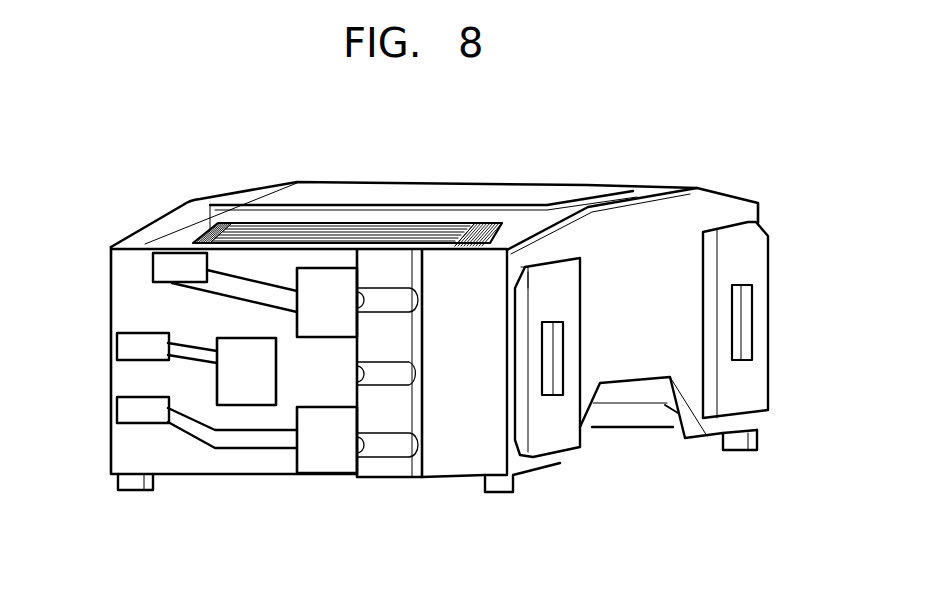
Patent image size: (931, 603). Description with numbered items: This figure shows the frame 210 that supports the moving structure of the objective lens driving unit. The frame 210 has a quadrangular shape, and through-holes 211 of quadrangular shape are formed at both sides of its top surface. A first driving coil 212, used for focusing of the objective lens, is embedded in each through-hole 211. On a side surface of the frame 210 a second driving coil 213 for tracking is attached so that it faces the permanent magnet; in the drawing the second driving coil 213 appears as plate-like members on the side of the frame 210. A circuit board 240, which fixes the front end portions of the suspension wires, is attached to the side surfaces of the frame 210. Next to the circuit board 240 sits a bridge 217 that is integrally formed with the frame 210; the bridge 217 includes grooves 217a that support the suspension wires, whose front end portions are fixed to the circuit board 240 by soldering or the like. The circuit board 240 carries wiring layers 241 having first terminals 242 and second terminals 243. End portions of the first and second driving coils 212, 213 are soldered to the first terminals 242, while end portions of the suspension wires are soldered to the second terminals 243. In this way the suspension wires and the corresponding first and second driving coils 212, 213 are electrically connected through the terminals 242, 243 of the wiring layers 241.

The frame 210 is at (509, 168).
The through-holes 211 is at (197, 234).
The first driving coil 212 is at (238, 237).
The second driving coil 213 is at (555, 445).
The bridge 217 is at (402, 470).
The grooves 217a is at (382, 448).
The circuit board 240 is at (168, 465).
The wiring layers 241 is at (227, 442).
The first terminals 242 is at (153, 265).
The second terminals 243 is at (320, 278).